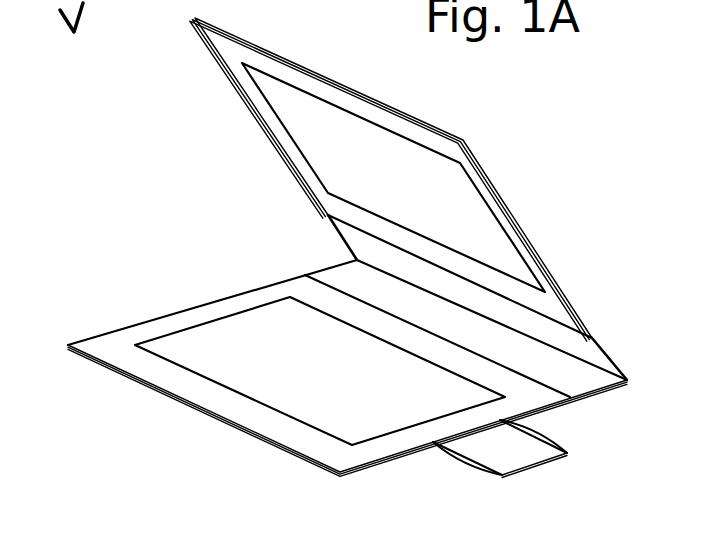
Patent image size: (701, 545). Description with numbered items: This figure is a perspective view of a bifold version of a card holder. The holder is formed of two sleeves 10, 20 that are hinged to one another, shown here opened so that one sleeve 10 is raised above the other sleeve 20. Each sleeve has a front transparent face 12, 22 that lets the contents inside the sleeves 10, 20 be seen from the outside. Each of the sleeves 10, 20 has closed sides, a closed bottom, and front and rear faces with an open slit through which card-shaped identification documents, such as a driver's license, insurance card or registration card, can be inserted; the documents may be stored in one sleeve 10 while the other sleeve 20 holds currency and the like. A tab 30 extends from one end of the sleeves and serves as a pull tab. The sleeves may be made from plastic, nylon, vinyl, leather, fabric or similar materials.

The sleeve 10 is at (506, 195).
The front transparent face 12 is at (480, 227).
The sleeve 20 is at (287, 448).
The front transparent face 22 is at (260, 360).
The tab 30 is at (528, 455).